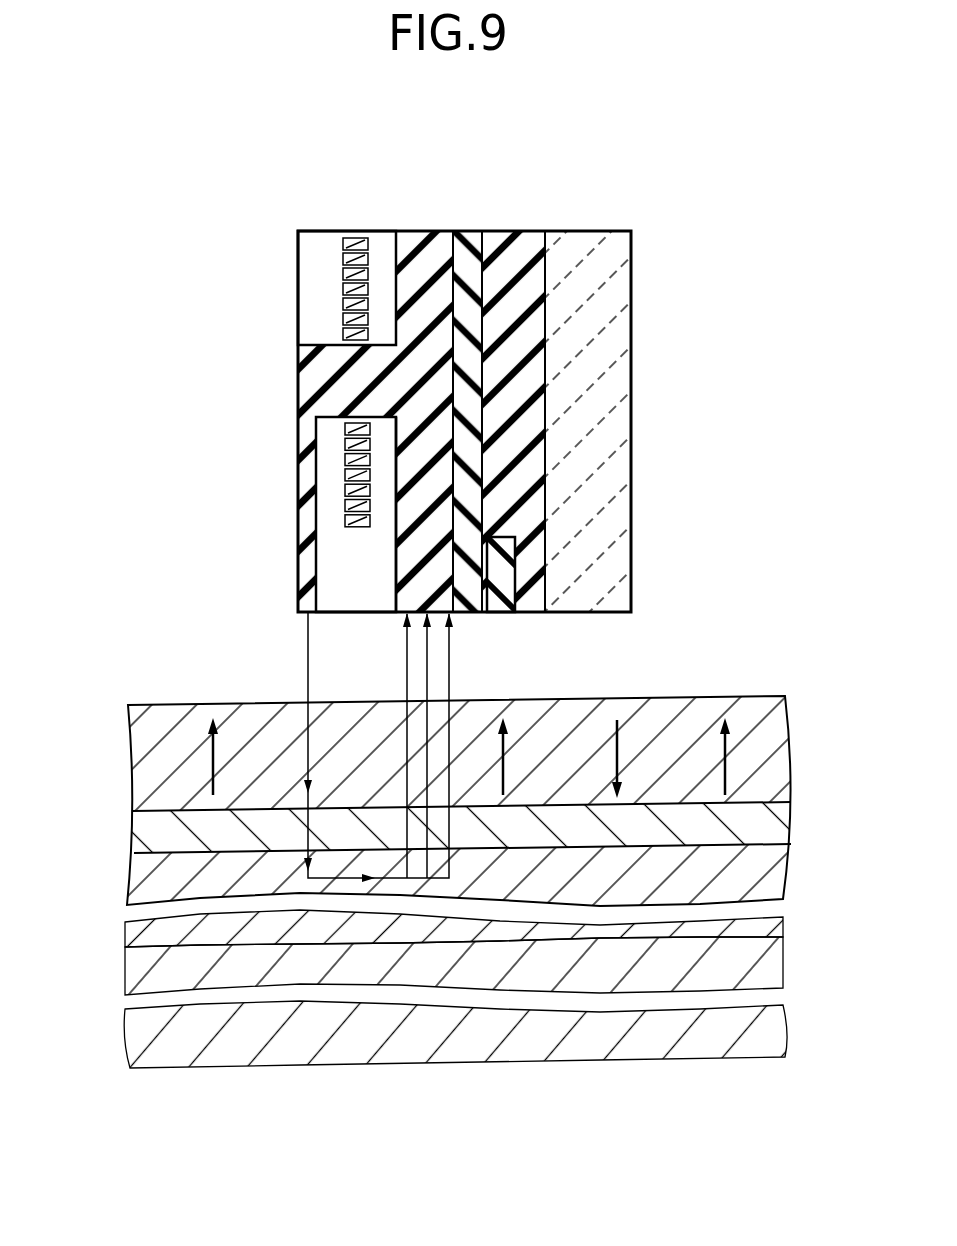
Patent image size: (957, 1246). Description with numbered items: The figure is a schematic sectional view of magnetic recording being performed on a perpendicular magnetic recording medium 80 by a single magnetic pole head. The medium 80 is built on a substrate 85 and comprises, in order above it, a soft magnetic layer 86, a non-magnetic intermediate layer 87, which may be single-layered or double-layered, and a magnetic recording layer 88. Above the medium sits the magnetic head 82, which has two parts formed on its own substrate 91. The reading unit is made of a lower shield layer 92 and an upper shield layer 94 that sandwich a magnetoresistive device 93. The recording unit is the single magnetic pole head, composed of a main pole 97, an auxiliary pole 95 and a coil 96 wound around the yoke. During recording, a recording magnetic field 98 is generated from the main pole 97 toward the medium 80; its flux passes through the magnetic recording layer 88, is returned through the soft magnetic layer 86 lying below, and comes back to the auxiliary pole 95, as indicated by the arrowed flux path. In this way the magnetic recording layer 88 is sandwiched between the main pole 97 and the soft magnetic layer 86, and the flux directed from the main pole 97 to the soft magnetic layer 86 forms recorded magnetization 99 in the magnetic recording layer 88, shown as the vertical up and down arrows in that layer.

The perpendicular magnetic recording medium 80 is at (96, 842).
The magnetic head 82 is at (268, 449).
The substrate 85 is at (778, 963).
The soft magnetic layer 86 is at (784, 872).
The non-magnetic intermediate layer 87 is at (792, 817).
The magnetic recording layer 88 is at (791, 744).
The substrate 91 is at (583, 231).
The lower shield layer 92 is at (510, 231).
The magnetoresistive device 93 is at (498, 612).
The upper shield layer 94 is at (468, 231).
The auxiliary pole 95 is at (394, 594).
The coil 96 is at (352, 231).
The main pole 97 is at (298, 572).
The recording magnetic field 98 is at (308, 652).
The recorded magnetization 99 is at (210, 768).